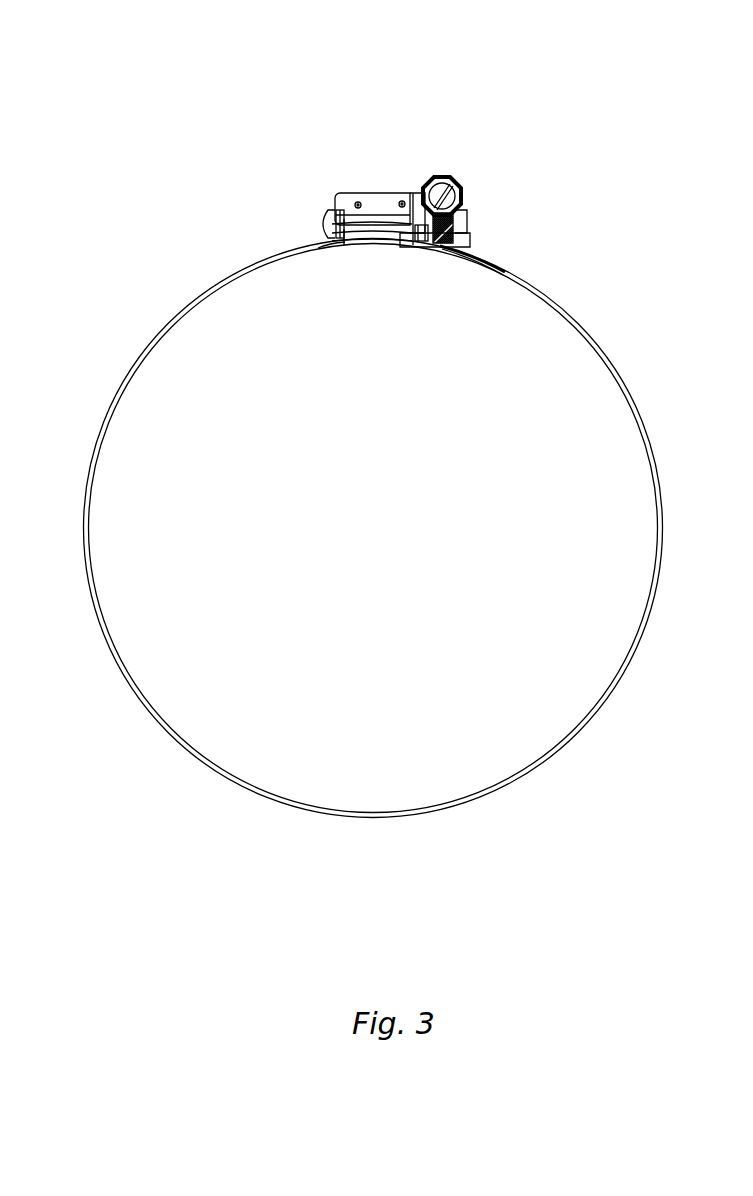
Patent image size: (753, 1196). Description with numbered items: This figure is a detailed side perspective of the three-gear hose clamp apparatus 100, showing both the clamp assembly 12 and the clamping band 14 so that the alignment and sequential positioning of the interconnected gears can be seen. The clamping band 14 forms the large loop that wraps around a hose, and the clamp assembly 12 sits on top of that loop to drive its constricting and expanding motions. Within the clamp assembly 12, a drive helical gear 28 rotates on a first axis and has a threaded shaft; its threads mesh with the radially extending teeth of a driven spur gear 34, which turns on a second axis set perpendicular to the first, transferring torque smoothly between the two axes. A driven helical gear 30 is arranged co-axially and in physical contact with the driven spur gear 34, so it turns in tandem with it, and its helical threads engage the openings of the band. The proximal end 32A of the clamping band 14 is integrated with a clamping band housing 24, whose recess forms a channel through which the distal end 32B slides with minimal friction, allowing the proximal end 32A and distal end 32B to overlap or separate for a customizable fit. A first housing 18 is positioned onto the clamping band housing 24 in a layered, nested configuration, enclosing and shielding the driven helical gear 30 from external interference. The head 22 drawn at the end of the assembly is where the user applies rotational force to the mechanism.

The clamp apparatus 100 is at (121, 50).
The clamp assembly 12 is at (344, 157).
The clamping band 14 is at (229, 269).
The first housing 18 is at (385, 193).
The screw head 22 is at (468, 180).
The clamping band housing 24 is at (383, 248).
The drive helical gear 28 is at (441, 176).
The driven helical gear 30 is at (331, 197).
The proximal end 32A is at (326, 250).
The distal end 32B is at (461, 262).
The driven spur gear 34 is at (446, 248).